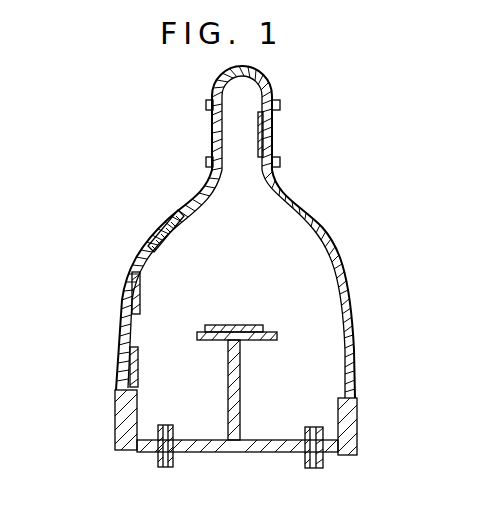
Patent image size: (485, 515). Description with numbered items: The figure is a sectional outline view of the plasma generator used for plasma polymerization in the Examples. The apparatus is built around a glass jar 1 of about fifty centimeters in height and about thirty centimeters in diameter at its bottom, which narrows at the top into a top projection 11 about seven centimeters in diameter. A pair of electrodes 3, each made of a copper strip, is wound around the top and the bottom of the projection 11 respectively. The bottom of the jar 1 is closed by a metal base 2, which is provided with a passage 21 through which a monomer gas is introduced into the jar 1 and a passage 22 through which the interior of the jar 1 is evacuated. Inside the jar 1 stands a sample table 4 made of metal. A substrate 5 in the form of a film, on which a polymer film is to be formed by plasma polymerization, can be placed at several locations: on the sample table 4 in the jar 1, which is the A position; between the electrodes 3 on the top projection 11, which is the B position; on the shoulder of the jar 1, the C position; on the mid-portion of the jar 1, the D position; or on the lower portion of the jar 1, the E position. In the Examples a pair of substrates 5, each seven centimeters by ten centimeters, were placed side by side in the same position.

The glass jar 1 is at (350, 310).
The top projection 11 is at (216, 90).
The electrodes 3 is at (281, 104).
The B position B is at (258, 142).
The C position C is at (178, 222).
The D position D is at (144, 292).
The E position E is at (139, 360).
The A position A is at (224, 325).
The substrate 5 is at (248, 332).
The sample table 4 is at (241, 371).
The metal base 2 is at (114, 408).
The passage 21 is at (157, 462).
The passage 22 is at (323, 459).